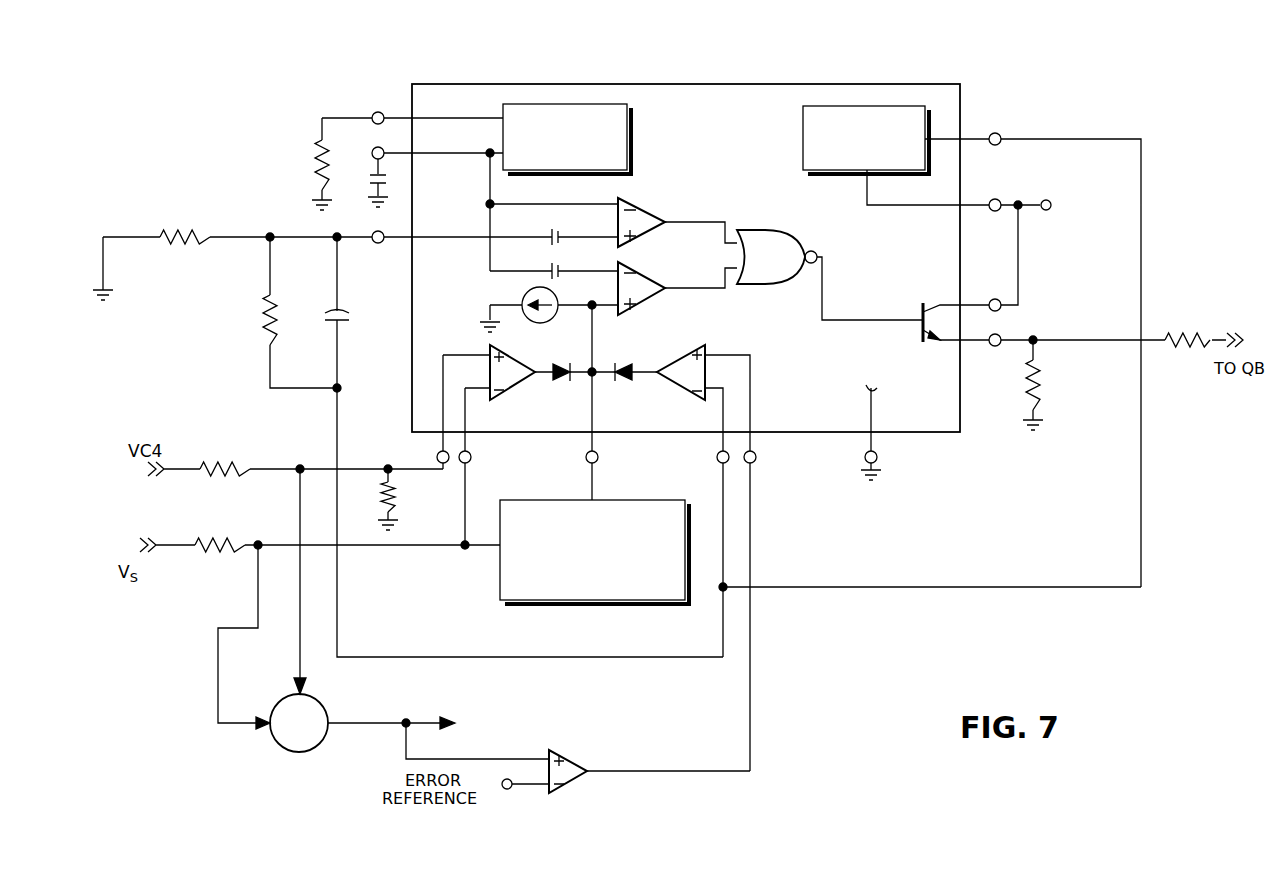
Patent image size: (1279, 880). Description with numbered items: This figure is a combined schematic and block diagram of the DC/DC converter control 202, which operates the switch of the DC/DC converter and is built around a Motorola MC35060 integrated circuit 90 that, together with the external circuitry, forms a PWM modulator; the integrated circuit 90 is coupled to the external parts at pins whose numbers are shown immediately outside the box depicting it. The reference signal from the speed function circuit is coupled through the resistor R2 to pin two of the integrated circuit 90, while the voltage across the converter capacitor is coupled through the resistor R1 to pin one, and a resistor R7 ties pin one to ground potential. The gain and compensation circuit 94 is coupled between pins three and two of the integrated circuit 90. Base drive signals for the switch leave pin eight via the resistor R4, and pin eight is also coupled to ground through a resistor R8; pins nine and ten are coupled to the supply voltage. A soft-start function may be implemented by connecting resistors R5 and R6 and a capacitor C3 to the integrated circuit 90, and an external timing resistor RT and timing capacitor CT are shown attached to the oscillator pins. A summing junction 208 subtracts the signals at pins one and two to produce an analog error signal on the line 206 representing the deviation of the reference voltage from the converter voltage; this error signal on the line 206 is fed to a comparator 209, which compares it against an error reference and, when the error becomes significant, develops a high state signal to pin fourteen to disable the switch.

The integrated circuit 90 is at (960, 92).
The gain and compensation circuit 94 is at (572, 604).
The DC/DC converter control 202 is at (872, 603).
The line 206 is at (366, 725).
The summing junction 208 is at (296, 752).
The comparator 209 is at (565, 787).
The resistor R5 is at (186, 232).
The resistor R6 is at (262, 310).
The capacitor C3 is at (345, 326).
The timing resistor RT is at (306, 164).
The timing capacitor CT is at (363, 183).
The resistor R1 is at (222, 460).
The resistor R2 is at (240, 555).
The resistor R7 is at (398, 518).
The resistor R8 is at (1040, 400).
The resistor R4 is at (1196, 337).